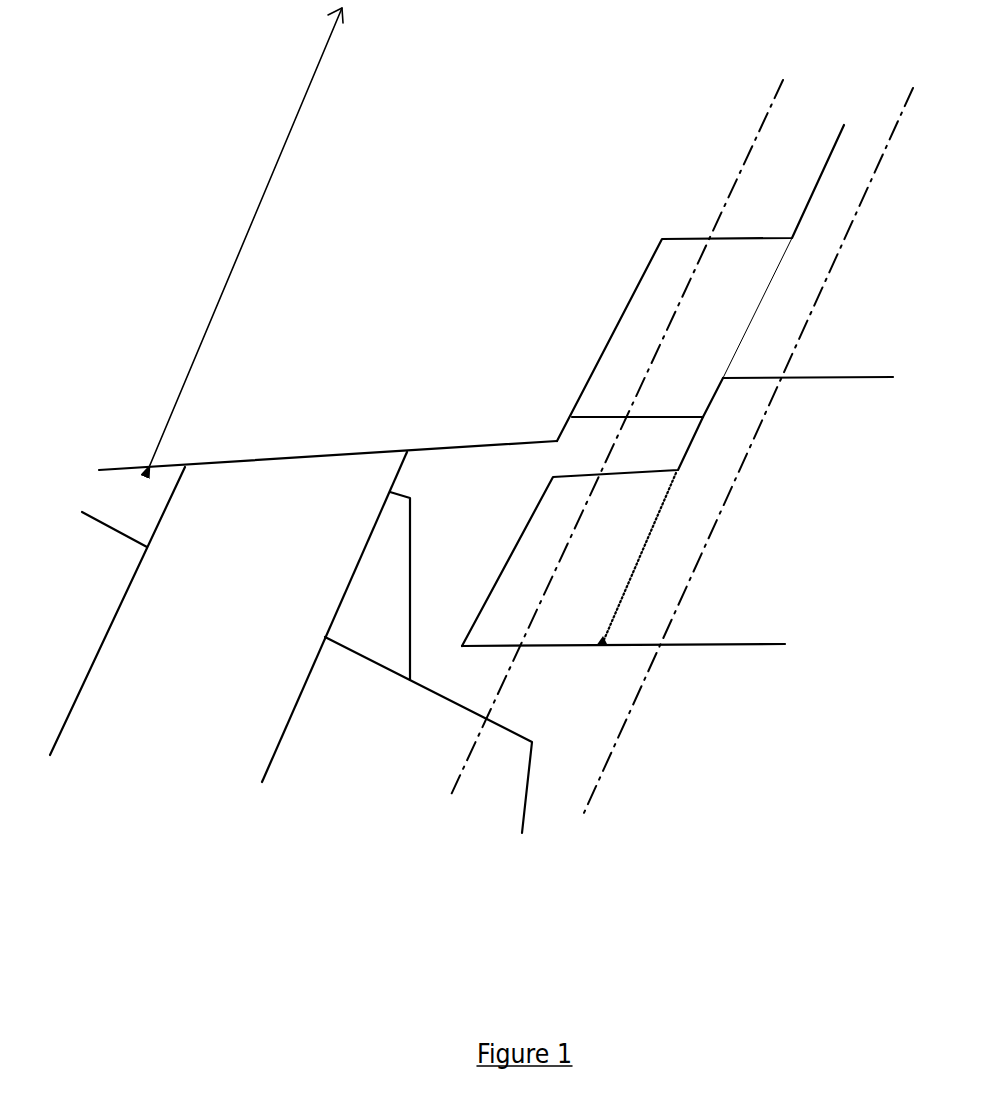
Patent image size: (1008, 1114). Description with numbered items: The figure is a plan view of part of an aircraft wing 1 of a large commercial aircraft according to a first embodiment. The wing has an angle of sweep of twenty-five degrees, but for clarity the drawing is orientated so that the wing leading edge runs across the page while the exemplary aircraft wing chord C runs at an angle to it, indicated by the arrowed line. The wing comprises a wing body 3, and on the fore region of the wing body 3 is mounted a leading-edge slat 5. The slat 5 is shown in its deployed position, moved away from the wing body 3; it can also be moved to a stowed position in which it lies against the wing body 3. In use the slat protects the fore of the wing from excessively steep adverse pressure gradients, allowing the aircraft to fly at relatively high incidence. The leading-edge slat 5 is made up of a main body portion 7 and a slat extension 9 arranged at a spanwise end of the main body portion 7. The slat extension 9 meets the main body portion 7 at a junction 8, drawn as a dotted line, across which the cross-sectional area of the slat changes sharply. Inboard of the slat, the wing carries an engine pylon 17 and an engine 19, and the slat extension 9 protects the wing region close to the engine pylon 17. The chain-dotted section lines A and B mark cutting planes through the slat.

The aircraft wing 1 is at (152, 232).
The wing body 3 is at (409, 354).
The leading-edge slat 5 is at (703, 663).
The main body portion 7 is at (797, 570).
The junction 8 is at (601, 650).
The slat extension 9 is at (537, 567).
The engine pylon 17 is at (257, 573).
The engine 19 is at (386, 650).
The section line A is at (745, 452).
The section line B is at (620, 442).
The aircraft wing chord C is at (268, 185).